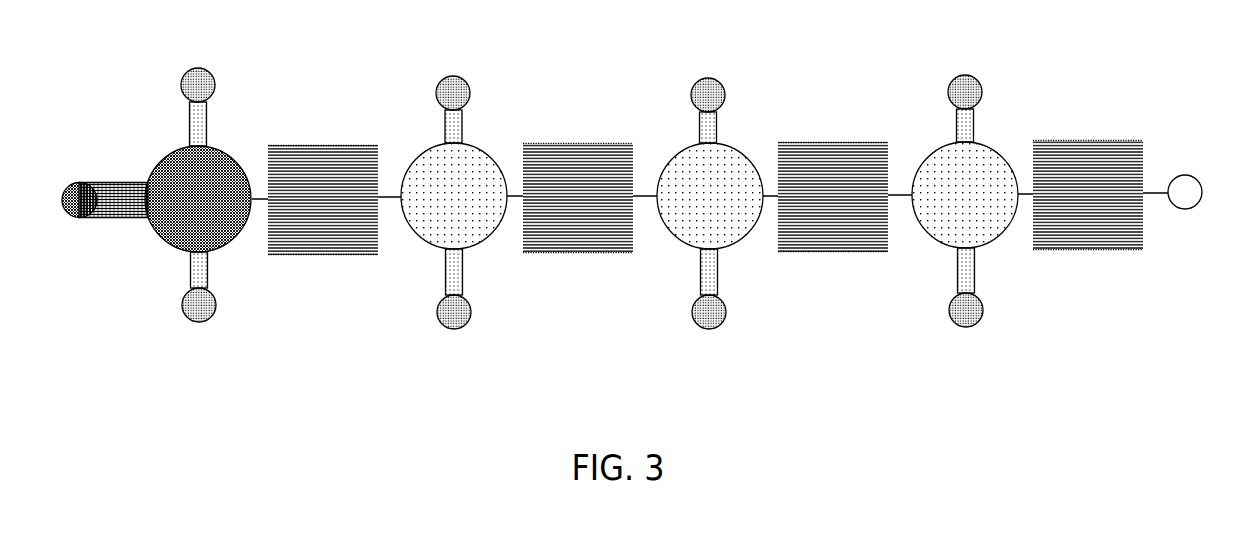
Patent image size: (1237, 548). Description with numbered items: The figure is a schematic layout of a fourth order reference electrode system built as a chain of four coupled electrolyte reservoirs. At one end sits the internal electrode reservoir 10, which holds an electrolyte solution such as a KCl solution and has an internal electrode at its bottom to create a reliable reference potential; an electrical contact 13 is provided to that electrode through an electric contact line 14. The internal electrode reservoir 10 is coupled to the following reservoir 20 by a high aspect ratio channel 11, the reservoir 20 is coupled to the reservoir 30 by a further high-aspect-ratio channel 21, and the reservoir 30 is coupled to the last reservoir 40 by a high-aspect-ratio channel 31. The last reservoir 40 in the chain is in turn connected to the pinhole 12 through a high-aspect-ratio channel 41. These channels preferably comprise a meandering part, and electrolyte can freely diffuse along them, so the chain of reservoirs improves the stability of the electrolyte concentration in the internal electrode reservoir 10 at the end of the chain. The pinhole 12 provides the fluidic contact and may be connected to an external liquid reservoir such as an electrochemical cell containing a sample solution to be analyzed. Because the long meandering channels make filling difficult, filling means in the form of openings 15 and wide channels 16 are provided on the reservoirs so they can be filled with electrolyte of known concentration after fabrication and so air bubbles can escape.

The internal electrode reservoir 10 is at (198, 199).
The high aspect ratio channel 11 is at (317, 143).
The pinhole 12 is at (1185, 186).
The electrical contact 13 is at (80, 183).
The electric contact line 14 is at (123, 188).
The openings 15 is at (186, 81).
The wide channels 16 is at (189, 127).
The reservoir 20 is at (454, 196).
The high-aspect-ratio channel 21 is at (582, 141).
The reservoir 30 is at (710, 196).
The high-aspect-ratio channel 31 is at (830, 140).
The reservoir 40 is at (965, 195).
The high-aspect-ratio channel 41 is at (1092, 138).